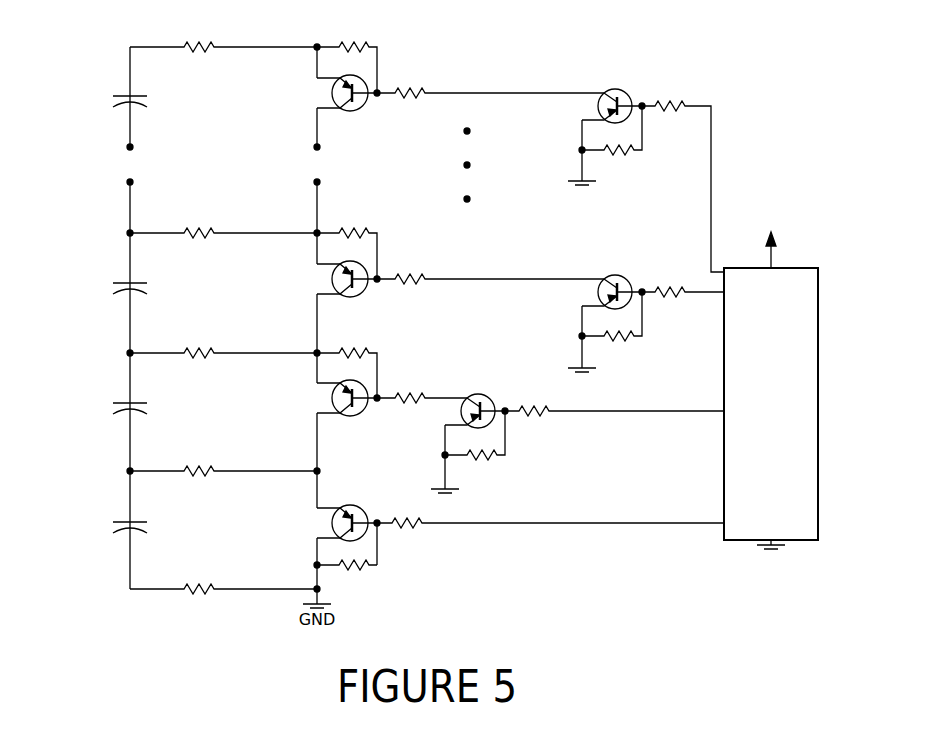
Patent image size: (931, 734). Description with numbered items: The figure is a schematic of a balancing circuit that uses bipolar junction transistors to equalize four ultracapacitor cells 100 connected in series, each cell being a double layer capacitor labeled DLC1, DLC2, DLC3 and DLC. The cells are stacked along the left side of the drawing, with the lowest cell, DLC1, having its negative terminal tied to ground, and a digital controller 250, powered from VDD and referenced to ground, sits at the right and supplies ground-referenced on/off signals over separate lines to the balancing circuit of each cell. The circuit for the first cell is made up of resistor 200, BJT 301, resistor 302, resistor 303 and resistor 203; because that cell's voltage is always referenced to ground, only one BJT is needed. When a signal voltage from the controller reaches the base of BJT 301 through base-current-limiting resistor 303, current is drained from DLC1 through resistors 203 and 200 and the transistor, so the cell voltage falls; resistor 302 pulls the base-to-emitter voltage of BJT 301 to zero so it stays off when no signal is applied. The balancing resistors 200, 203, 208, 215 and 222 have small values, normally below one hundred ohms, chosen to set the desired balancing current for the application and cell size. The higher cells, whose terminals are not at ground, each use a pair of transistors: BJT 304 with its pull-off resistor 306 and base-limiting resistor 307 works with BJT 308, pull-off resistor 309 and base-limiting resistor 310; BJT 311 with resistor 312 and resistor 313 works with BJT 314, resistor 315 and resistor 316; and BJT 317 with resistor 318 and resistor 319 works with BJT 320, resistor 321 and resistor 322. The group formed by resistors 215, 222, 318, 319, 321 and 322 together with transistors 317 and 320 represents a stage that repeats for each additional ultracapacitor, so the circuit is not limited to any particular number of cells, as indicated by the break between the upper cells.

The ultracapacitor cell 100 is at (86, 478).
The resistor 200 is at (197, 606).
The resistor 203 is at (204, 488).
The resistor 208 is at (200, 366).
The resistor 215 is at (202, 243).
The resistor 222 is at (202, 62).
The digital controller 250 is at (724, 555).
The BJT 301 is at (322, 527).
The resistor 302 is at (358, 578).
The resistor 303 is at (408, 536).
The BJT 304 is at (322, 402).
The resistor 306 is at (361, 338).
The resistor 307 is at (413, 389).
The BJT 308 is at (453, 416).
The resistor 309 is at (484, 471).
The resistor 310 is at (538, 428).
The BJT 311 is at (322, 283).
The resistor 312 is at (361, 218).
The resistor 313 is at (410, 270).
The BJT 314 is at (590, 296).
The resistor 315 is at (618, 349).
The resistor 316 is at (659, 306).
The transistor 317 is at (322, 97).
The resistor 318 is at (361, 31).
The resistor 319 is at (414, 79).
The transistor 320 is at (590, 110).
The resistor 321 is at (621, 163).
The resistor 322 is at (674, 95).